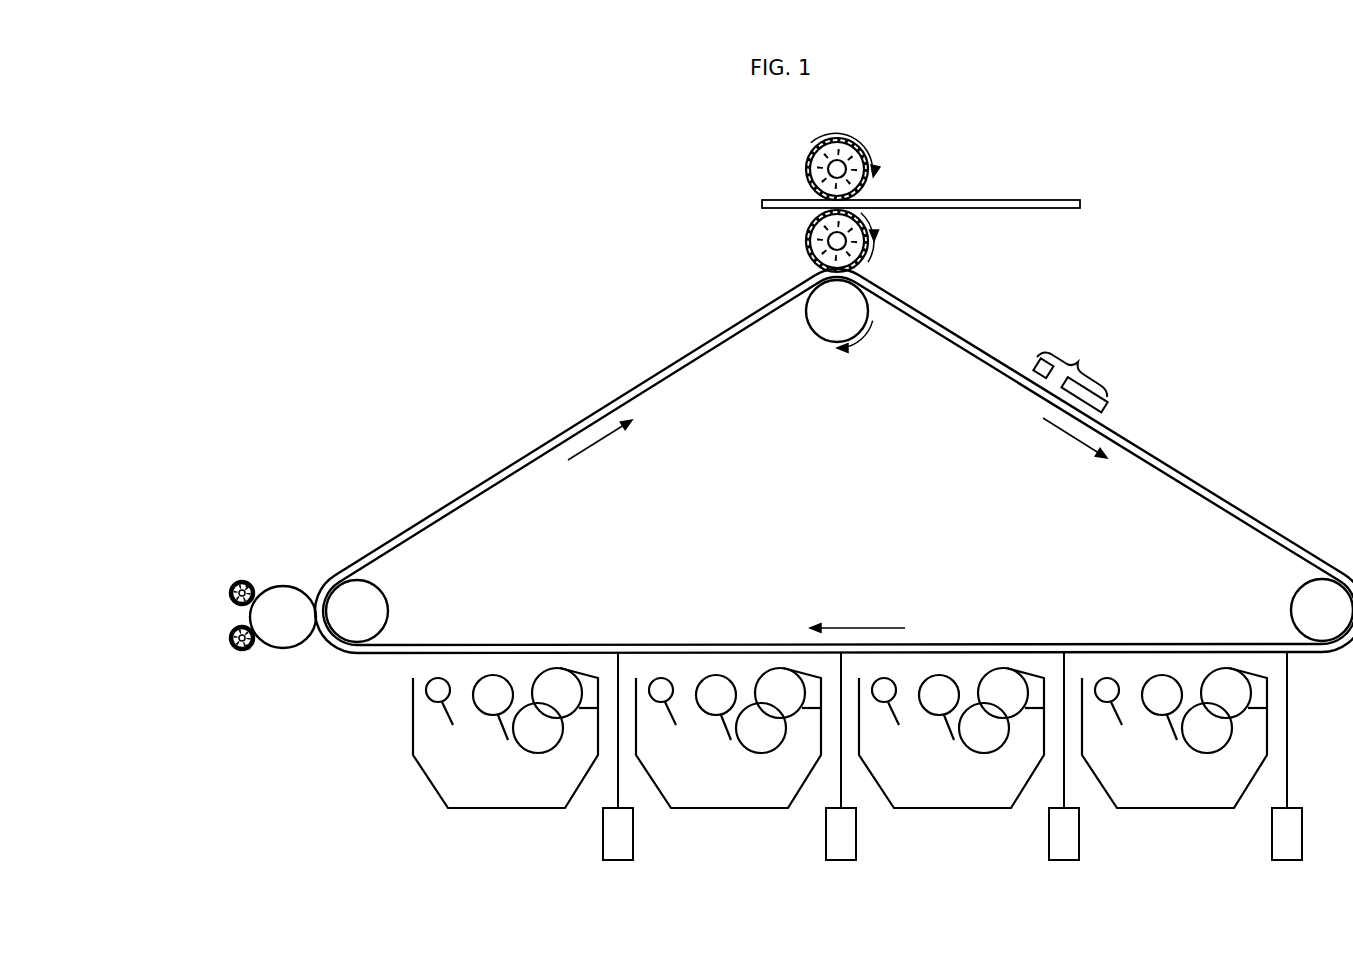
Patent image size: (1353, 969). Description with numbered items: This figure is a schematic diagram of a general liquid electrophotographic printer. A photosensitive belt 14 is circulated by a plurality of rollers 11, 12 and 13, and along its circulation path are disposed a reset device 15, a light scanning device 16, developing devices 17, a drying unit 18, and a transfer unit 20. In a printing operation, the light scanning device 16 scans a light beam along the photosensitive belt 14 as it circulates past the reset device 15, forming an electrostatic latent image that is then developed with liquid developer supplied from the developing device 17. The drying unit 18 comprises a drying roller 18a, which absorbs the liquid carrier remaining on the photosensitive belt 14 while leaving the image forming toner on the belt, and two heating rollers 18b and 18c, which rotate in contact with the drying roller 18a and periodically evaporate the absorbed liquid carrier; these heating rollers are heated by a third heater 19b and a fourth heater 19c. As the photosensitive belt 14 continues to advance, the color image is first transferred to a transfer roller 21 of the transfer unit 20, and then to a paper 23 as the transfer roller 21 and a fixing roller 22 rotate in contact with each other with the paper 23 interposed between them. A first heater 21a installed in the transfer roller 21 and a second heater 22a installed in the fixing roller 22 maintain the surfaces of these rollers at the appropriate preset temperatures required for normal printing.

The roller 11 is at (357, 637).
The roller 12 is at (857, 305).
The roller 13 is at (1332, 594).
The photosensitive belt 14 is at (1167, 477).
The reset device 15 is at (1070, 377).
The light scanning device 16 is at (611, 860).
The developing device 17 is at (573, 818).
The drying unit 18 is at (232, 568).
The drying roller 18a is at (303, 608).
The heating roller 18b is at (241, 580).
The heating roller 18c is at (240, 652).
The third heater 19b is at (248, 585).
The fourth heater 19c is at (248, 648).
The transfer unit 20 is at (905, 161).
The transfer roller 21 is at (812, 241).
The first heater 21a is at (829, 242).
The fixing roller 22 is at (862, 141).
The second heater 22a is at (829, 165).
The paper 23 is at (1027, 202).